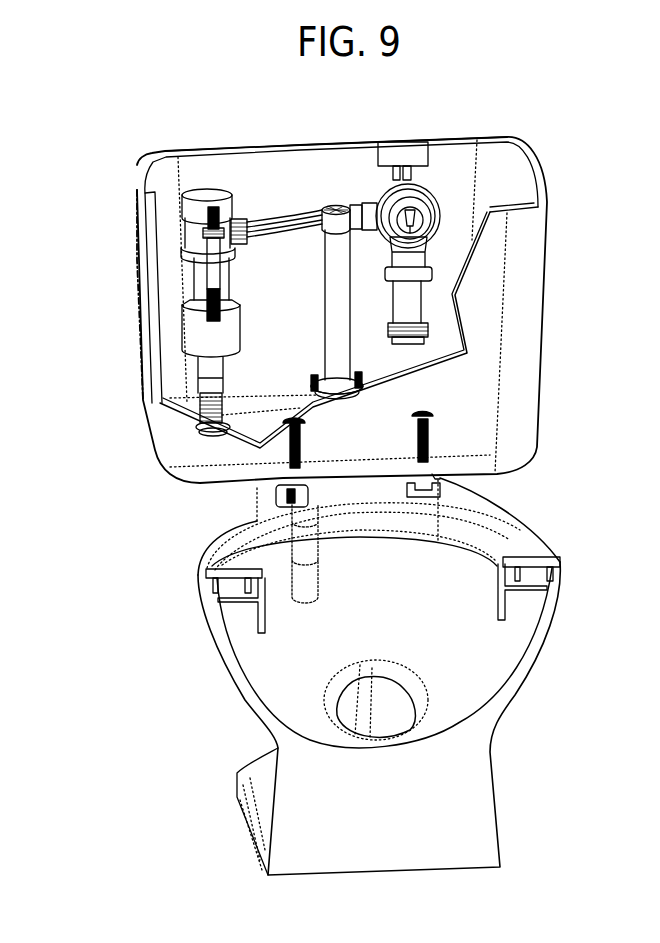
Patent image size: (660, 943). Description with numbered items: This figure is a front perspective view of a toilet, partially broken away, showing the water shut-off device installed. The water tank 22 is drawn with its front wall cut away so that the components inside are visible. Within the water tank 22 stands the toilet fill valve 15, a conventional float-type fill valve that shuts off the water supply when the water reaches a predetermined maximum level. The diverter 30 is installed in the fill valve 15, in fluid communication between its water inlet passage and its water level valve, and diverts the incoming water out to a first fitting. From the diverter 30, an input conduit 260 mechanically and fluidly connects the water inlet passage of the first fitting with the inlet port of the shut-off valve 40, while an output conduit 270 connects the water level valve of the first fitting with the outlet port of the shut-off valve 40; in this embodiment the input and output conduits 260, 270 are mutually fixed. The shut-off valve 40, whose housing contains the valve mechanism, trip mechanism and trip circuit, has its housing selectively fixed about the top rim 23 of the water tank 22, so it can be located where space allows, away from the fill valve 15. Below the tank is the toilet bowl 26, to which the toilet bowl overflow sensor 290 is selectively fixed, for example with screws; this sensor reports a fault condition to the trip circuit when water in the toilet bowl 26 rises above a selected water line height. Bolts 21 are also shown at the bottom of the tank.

The toilet fill valve 15 is at (218, 183).
The tank mounting bolts 21 is at (232, 435).
The water tank 22 is at (530, 253).
The top rim 23 is at (280, 147).
The toilet bowl 26 is at (535, 653).
The diverter 30 is at (190, 245).
The shut-off valve 40 is at (436, 188).
The input conduit 260 is at (276, 229).
The output conduit 270 is at (285, 217).
The toilet bowl overflow sensor 290 is at (313, 583).